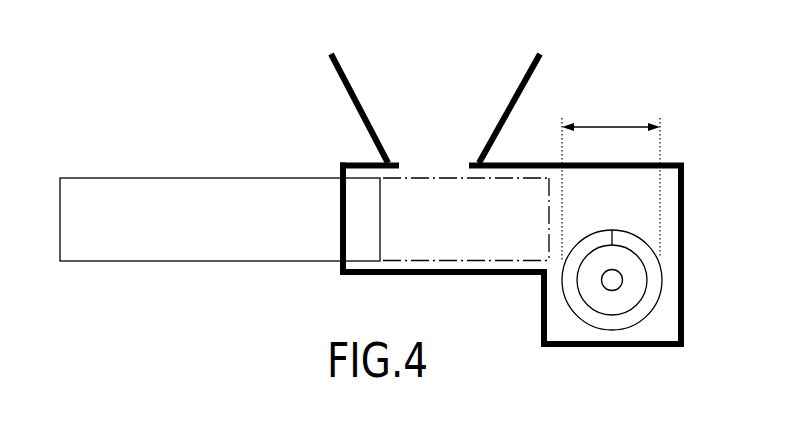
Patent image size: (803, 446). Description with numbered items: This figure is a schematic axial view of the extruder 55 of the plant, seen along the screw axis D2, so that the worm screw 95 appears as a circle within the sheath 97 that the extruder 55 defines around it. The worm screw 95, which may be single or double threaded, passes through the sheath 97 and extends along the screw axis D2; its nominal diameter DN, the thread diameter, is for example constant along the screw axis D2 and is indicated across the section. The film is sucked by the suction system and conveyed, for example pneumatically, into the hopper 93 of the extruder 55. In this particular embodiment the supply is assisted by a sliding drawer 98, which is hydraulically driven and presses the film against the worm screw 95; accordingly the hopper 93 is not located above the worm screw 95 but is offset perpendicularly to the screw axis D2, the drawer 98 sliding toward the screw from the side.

The extruder 55 is at (592, 75).
The hopper 93 is at (346, 90).
The sliding drawer 98 is at (165, 177).
The nominal diameter DN is at (611, 180).
The worm screw 95 is at (636, 270).
The screw axis D2 is at (613, 283).
The sheath 97 is at (552, 318).